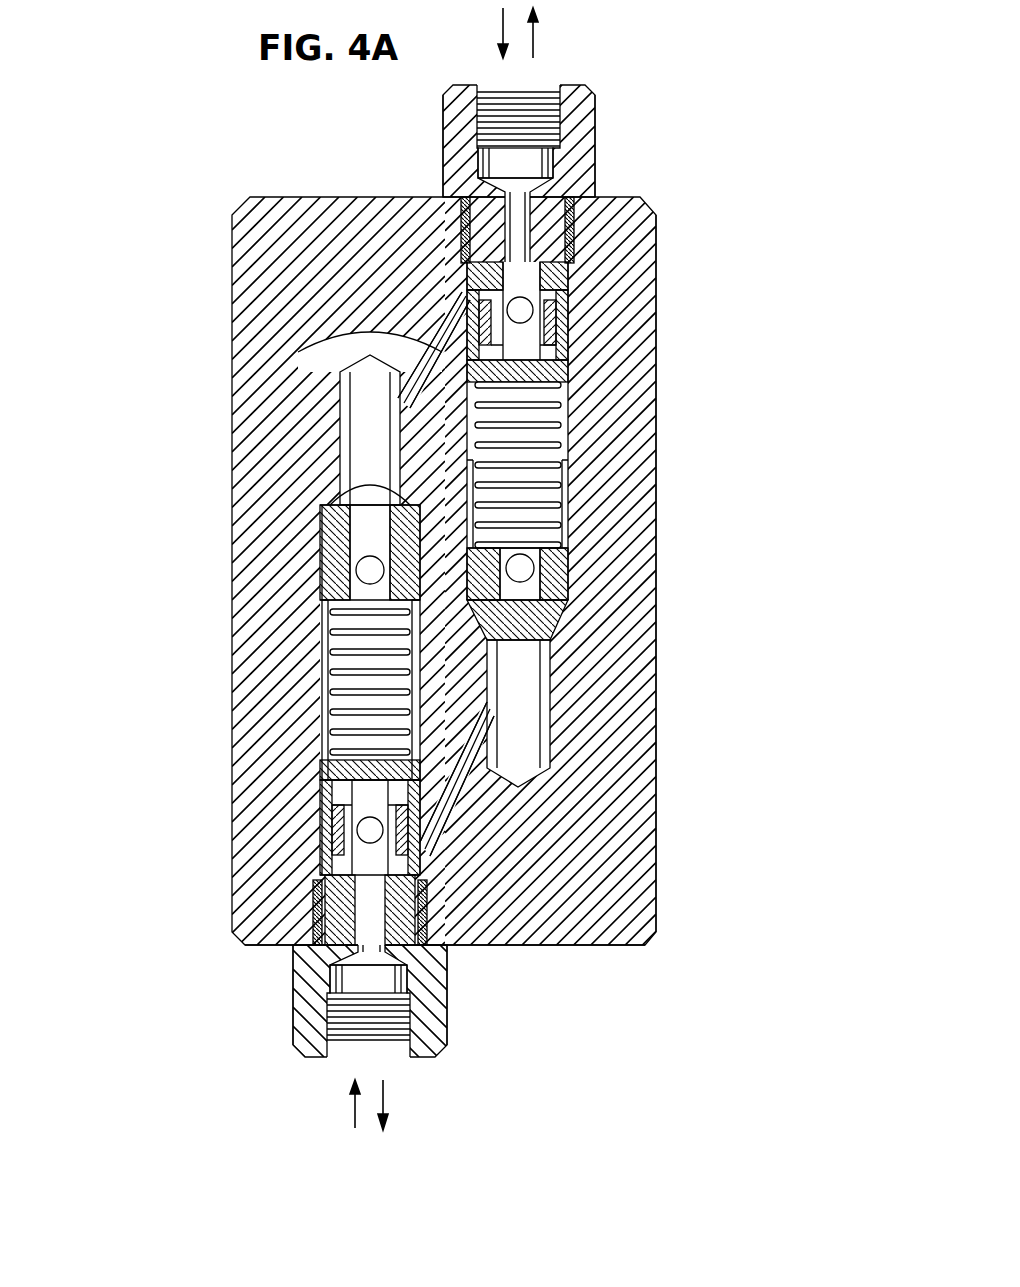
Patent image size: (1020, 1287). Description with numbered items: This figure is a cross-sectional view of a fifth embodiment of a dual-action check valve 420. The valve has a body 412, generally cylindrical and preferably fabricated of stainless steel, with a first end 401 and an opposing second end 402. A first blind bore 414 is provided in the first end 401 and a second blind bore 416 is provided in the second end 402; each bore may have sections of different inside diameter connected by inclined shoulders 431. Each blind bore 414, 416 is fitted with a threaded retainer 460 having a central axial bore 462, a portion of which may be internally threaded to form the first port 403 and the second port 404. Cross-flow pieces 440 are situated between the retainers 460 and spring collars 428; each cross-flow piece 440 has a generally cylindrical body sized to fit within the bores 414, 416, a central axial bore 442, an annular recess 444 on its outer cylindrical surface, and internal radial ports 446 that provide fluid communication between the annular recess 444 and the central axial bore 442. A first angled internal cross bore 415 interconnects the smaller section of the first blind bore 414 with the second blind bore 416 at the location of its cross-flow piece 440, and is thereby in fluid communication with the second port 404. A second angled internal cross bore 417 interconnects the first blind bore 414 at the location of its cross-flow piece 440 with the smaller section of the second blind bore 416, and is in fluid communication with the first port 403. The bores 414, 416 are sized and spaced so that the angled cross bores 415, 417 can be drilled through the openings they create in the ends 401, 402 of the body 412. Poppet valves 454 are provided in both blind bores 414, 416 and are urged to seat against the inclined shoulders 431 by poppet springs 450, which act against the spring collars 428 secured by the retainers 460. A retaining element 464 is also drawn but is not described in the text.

The first end 401 is at (322, 197).
The second end 402 is at (560, 948).
The first port 403 is at (540, 88).
The second port 404 is at (350, 1058).
The body 412 is at (565, 550).
The first blind bore 414 is at (570, 458).
The first angled internal cross bore 415 is at (462, 796).
The second blind bore 416 is at (326, 705).
The second angled internal cross bore 417 is at (352, 338).
The dual-action check valve 420 is at (670, 206).
The spring collar 428 is at (562, 372).
The inclined shoulder 431 is at (548, 592).
The cross-flow piece 440 is at (560, 280).
The central axial bore 442 is at (558, 322).
The annular recess 444 is at (525, 312).
The internal radial port 446 is at (560, 302).
The poppet spring 450 is at (560, 512).
The poppet valve 454 is at (548, 650).
The threaded retainer 460 is at (596, 123).
The central axial bore 462 is at (490, 162).
The retaining ring 464 is at (565, 272).